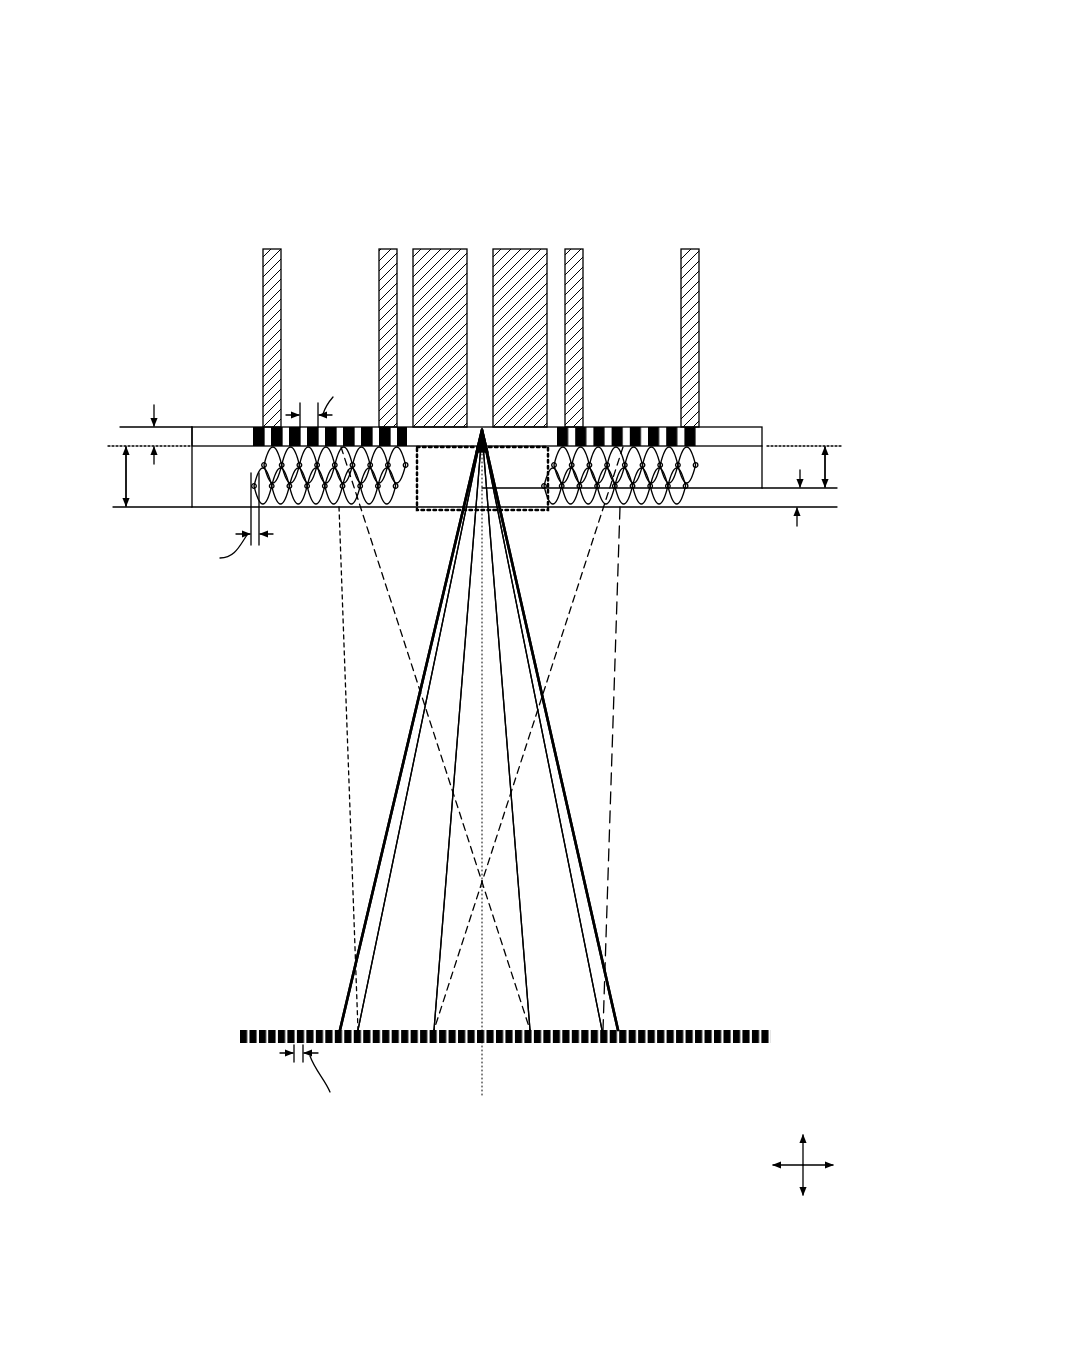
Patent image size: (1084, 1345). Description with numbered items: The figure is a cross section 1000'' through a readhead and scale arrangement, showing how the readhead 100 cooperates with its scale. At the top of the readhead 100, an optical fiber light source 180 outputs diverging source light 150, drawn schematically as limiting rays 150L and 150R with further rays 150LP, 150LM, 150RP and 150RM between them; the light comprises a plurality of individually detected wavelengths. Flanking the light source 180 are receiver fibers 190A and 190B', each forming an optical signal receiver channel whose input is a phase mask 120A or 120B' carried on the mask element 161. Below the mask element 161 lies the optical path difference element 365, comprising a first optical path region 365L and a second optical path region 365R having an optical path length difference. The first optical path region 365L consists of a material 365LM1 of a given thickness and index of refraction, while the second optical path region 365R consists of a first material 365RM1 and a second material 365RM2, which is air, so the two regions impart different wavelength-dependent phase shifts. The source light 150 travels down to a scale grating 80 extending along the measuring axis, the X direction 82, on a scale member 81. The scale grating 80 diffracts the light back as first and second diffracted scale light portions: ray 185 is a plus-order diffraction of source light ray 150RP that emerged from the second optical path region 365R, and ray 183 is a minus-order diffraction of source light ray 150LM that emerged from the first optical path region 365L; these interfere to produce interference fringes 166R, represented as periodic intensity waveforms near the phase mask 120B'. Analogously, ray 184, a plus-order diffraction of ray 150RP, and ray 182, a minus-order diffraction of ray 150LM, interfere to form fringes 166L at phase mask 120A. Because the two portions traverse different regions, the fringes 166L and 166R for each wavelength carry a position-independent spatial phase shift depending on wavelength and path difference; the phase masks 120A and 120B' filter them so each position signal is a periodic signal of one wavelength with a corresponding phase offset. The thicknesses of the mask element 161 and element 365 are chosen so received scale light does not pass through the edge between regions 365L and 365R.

The cross section 1000'' is at (479, 630).
The readhead 100 is at (712, 210).
The receiver fiber 190A is at (398, 242).
The optical fiber light source 180 is at (552, 242).
The receiver fiber 190B' is at (636, 313).
The mask element 161 is at (728, 427).
The phase mask 120A is at (248, 446).
The phase mask 120B' is at (711, 421).
The interference fringes 166L is at (242, 471).
The interference fringes 166R is at (720, 465).
The diverging source light 150 is at (458, 522).
The limiting ray 150L is at (380, 858).
The left beam inner ray 150LP is at (383, 913).
The source light ray 150LM is at (440, 948).
The limiting ray 150R is at (590, 900).
The source light ray 150RP is at (588, 958).
The right beam central ray 150RM is at (527, 997).
The diffracted scale light portion 182 is at (345, 665).
The diffracted scale light portion 183 is at (540, 662).
The diffracted scale light portion 184 is at (396, 617).
The diffracted scale light portion 185 is at (615, 756).
The optical path difference element 365 is at (818, 550).
The second optical path region 365R is at (744, 540).
The first optical path region 365L is at (633, 551).
The first material 365RM1 is at (514, 477).
The second material 365RM2 is at (511, 500).
The material 365LM1 is at (448, 490).
The scale grating 80 is at (236, 1035).
The scale member 81 is at (273, 1046).
The X axis direction 82 is at (836, 1151).